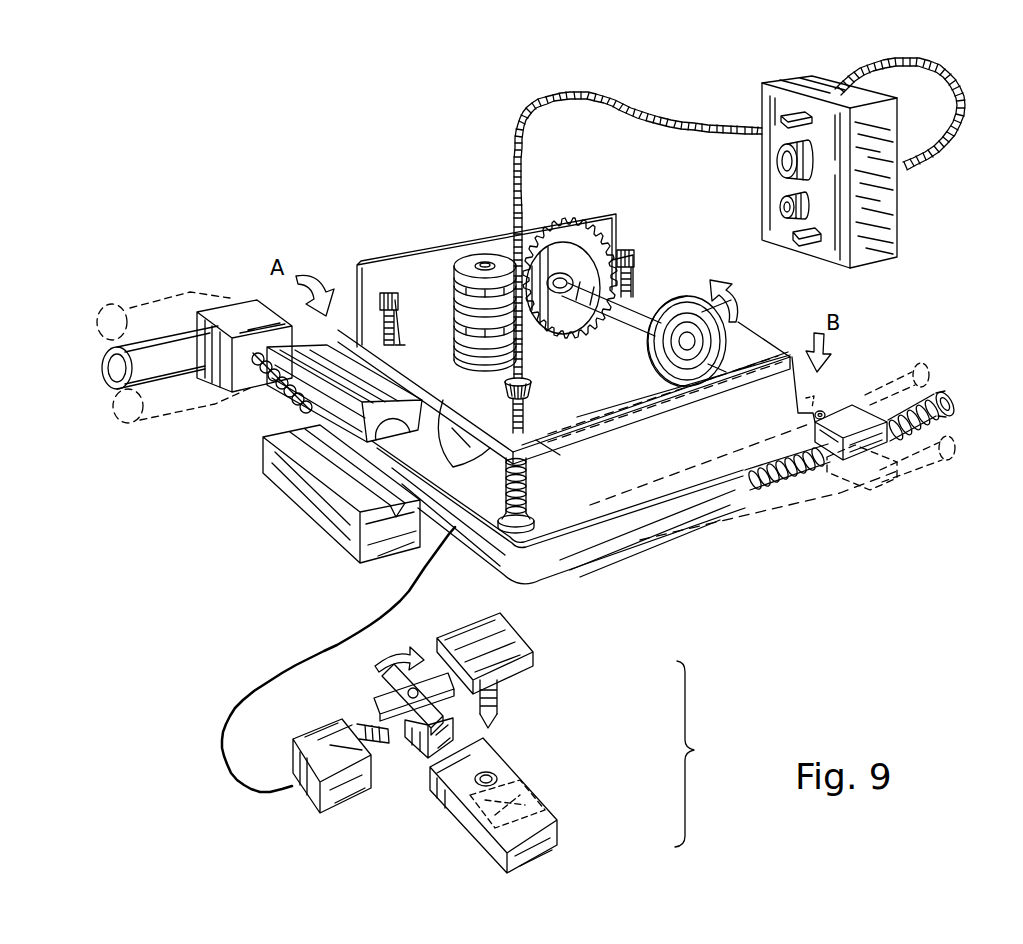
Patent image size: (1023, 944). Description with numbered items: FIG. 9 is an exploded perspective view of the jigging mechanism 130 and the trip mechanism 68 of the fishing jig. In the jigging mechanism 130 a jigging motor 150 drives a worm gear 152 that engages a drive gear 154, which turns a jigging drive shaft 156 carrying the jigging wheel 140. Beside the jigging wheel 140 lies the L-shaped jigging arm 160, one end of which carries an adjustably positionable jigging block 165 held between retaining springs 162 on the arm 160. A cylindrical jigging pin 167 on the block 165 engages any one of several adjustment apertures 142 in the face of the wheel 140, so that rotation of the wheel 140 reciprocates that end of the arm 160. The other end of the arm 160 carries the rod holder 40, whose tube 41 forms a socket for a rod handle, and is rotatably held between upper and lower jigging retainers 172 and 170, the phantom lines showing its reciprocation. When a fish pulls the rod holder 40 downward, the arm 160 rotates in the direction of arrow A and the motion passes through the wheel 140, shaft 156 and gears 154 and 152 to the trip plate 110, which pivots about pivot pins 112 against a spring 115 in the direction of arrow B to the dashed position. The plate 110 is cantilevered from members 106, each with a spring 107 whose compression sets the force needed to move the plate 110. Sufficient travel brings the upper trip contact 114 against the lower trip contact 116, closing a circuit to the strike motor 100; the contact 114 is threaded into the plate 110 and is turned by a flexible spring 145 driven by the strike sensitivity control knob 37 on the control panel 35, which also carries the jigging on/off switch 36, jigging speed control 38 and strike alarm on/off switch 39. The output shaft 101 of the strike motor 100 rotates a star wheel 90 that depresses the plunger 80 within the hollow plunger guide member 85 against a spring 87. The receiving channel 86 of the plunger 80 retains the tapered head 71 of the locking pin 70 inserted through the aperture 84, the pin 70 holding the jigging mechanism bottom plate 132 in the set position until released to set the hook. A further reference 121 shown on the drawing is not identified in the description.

The control panel 35 is at (880, 262).
The jigging on/off switch 36 is at (790, 112).
The strike sensitivity control knob 37 is at (780, 160).
The jigging speed control 38 is at (780, 207).
The strike alarm on/off switch 39 is at (806, 248).
The rod holder 40 is at (165, 355).
The tube 41 is at (103, 376).
The trip mechanism 68 is at (701, 754).
The locking pin 70 is at (499, 696).
The tapered head 71 is at (499, 720).
The plunger 80 is at (437, 742).
The aperture 84 is at (500, 777).
The plunger guide member 85 is at (525, 860).
The receiving channel 86 is at (465, 812).
The spring 87 is at (535, 806).
The star wheel 90 is at (380, 694).
The strike motor 100 is at (340, 808).
The output shaft 101 is at (358, 728).
The member 106 is at (405, 300).
The spring 107 is at (383, 290).
The trip plate 110 is at (609, 390).
The pivot pins 112 is at (352, 333).
The upper trip contact 114 is at (532, 437).
The spring 115 is at (531, 481).
The lower trip contact 116 is at (530, 516).
The cable 121 is at (275, 673).
The jigging mechanism 130 is at (340, 188).
The jigging mechanism bottom plate 132 is at (515, 645).
The jigging wheel 140 is at (684, 303).
The adjustment apertures 142 is at (718, 348).
The flexible spring 145 is at (588, 95).
The jigging motor 150 is at (452, 452).
The worm gear 152 is at (471, 258).
The drive gear 154 is at (562, 224).
The jigging drive shaft 156 is at (640, 317).
The jigging arm 160 is at (483, 558).
The retaining springs 162 is at (953, 407).
The jigging block 165 is at (865, 440).
The jigging pin 167 is at (824, 411).
The lower jigging retainer 170 is at (293, 485).
The upper jigging retainer 172 is at (262, 388).